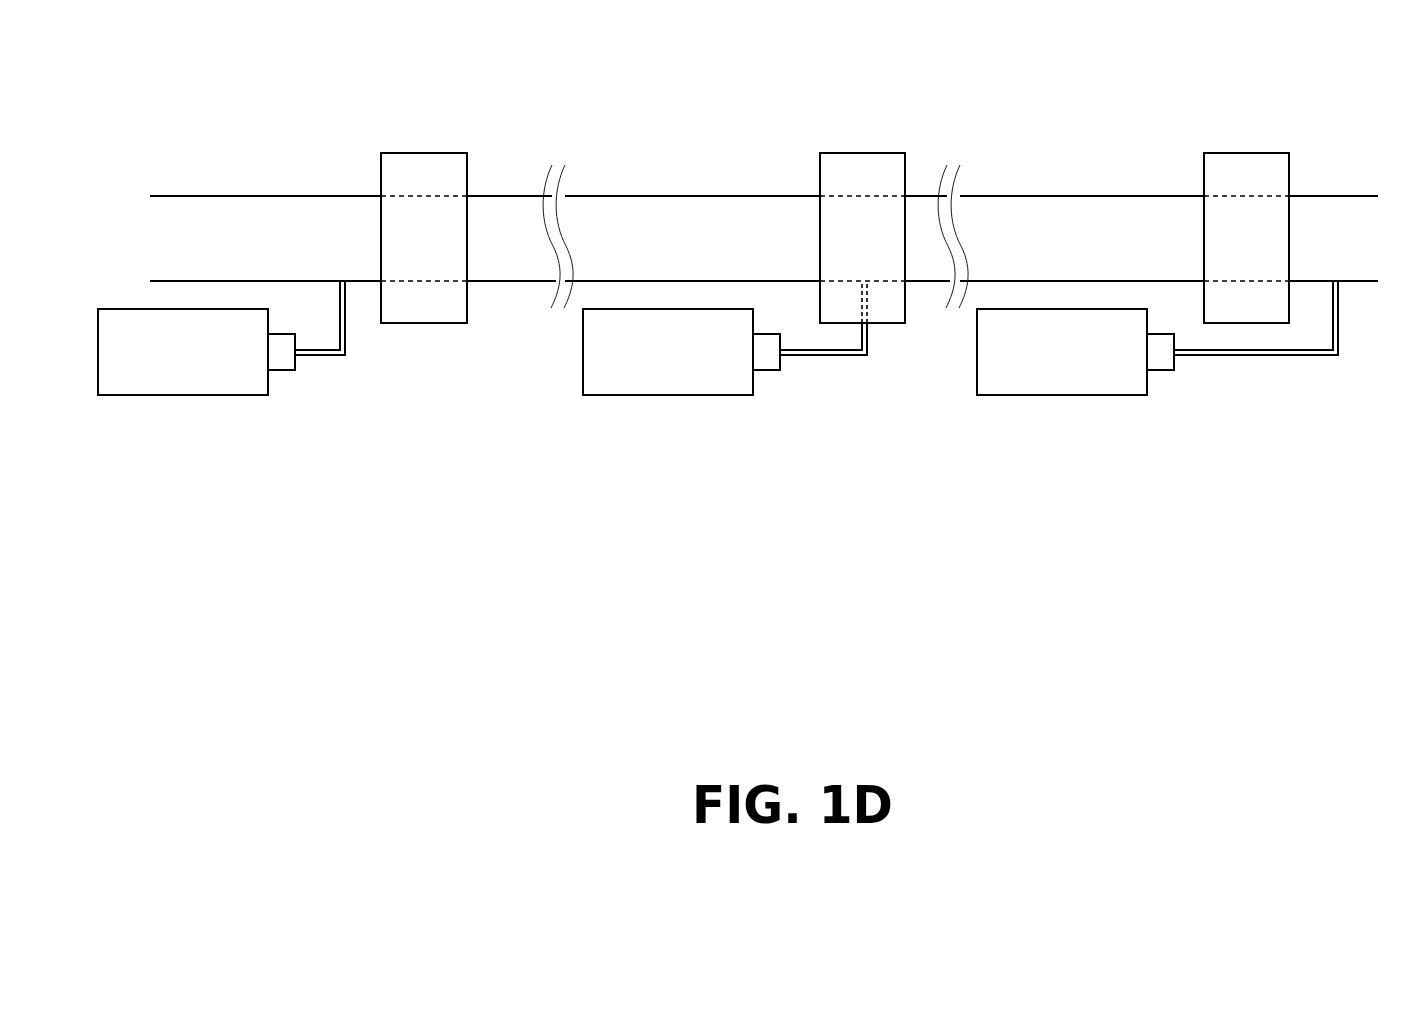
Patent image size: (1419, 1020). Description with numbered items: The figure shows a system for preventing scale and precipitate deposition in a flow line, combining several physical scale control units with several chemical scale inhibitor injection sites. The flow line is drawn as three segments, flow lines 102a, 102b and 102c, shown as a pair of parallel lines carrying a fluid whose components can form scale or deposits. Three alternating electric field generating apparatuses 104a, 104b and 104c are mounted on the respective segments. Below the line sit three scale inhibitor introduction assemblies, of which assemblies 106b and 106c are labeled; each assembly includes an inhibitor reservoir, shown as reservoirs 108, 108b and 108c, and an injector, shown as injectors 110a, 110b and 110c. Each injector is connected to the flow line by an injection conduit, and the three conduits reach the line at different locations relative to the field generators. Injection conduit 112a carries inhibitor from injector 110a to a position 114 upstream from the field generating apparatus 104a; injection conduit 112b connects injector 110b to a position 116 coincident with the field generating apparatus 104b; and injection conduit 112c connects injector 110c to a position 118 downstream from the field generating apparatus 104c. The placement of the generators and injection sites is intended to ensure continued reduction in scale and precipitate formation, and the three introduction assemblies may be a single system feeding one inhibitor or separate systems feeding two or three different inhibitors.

The flow line 102a is at (297, 196).
The flow line 102b is at (765, 196).
The flow line 102c is at (1147, 196).
The alternating electric field generating apparatus 104a is at (424, 238).
The alternating electric field generating apparatus 104b is at (862, 238).
The alternating electric field generating apparatus 104c is at (1246, 238).
The scale inhibitor introduction assembly 106b is at (763, 386).
The scale inhibitor introduction assembly 106c is at (758, 386).
The inhibitor reservoir 108 is at (183, 352).
The inhibitor reservoir 108b is at (668, 352).
The inhibitor reservoir 108c is at (1062, 352).
The injector 110a is at (283, 371).
The injector 110b is at (770, 371).
The injector 110c is at (1162, 371).
The injection conduit 112a is at (346, 357).
The injection conduit 112b is at (868, 357).
The injection conduit 112c is at (1339, 357).
The position upstream from the field generating apparatus 114 is at (341, 274).
The position coincident with the field generating apparatus 116 is at (861, 275).
The position downstream from the field generating apparatus 118 is at (1334, 266).